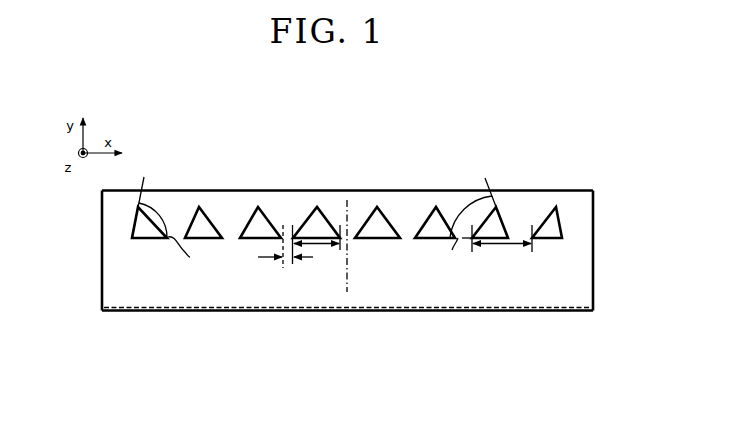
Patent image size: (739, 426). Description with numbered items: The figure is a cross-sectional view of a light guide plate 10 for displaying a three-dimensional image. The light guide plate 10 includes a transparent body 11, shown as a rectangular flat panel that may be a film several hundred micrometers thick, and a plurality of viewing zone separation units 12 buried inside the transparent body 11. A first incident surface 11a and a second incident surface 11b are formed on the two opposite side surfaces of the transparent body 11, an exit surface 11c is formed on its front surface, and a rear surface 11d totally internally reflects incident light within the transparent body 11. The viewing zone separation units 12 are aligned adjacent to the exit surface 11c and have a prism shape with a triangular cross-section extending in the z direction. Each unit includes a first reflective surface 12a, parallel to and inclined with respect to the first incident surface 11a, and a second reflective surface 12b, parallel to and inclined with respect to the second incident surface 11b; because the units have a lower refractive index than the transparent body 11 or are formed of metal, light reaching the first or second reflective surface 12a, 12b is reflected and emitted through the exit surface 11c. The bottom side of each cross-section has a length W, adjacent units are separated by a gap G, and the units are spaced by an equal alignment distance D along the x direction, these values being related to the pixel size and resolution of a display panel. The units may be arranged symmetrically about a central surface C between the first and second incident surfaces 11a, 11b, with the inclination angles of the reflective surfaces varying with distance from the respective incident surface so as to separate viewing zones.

The light guide plate 10 is at (606, 126).
The transparent body 11 is at (346, 251).
The first incident surface 11a is at (102, 250).
The second incident surface 11b is at (593, 249).
The exit surface 11c is at (347, 190).
The rear surface 11d is at (437, 311).
The viewing zone separation unit 12 is at (203, 205).
The first reflective surface 12a is at (190, 225).
The second reflective surface 12b is at (498, 211).
The gap G is at (283, 270).
The length of bottom side W is at (322, 247).
The central surface C is at (348, 250).
The alignment distance D is at (488, 246).